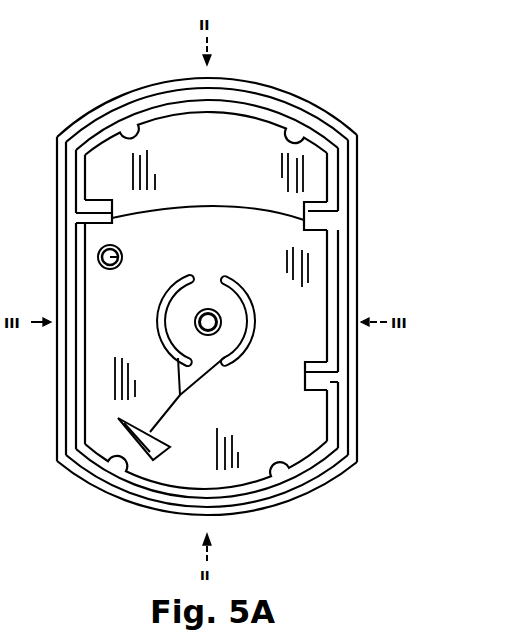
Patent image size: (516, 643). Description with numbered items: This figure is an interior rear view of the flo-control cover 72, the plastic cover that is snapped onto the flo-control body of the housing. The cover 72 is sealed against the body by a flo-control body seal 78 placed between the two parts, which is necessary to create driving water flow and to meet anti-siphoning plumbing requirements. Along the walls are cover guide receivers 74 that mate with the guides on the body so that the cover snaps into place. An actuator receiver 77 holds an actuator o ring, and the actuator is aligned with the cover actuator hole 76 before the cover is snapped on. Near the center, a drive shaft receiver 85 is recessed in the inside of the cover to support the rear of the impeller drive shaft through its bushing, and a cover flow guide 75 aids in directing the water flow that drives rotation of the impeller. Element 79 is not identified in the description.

The flo-control cover 72 is at (57, 402).
The cover guide receivers 74 is at (320, 365).
The cover flow guide 75 is at (180, 395).
The cover actuator hole 76 is at (122, 257).
The actuator receiver 77 is at (118, 250).
The flo-control body seal 78 is at (85, 215).
The inner wall 79 is at (57, 247).
The drive shaft receiver 85 is at (195, 322).